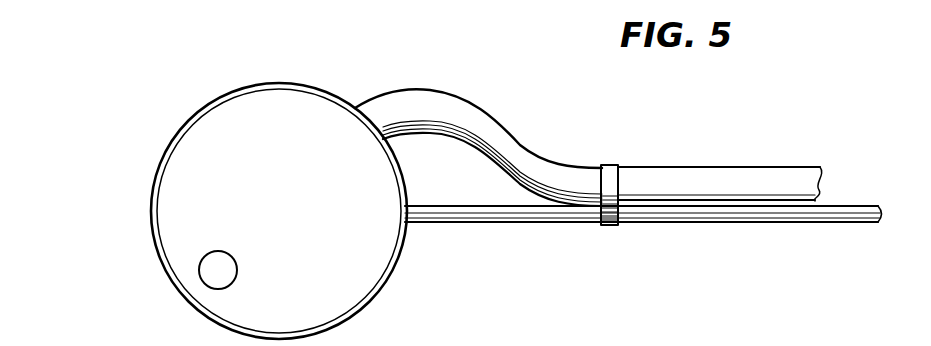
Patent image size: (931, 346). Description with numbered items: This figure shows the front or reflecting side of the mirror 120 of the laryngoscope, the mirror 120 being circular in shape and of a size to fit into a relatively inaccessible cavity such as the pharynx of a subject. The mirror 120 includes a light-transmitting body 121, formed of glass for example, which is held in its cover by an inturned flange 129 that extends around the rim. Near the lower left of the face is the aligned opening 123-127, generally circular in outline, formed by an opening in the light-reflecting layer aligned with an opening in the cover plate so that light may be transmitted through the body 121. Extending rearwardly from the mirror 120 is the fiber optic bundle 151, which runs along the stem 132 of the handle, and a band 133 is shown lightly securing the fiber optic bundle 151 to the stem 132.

The mirror 120 is at (230, 210).
The inturned flange 129 is at (177, 133).
The light-transmitting body 121 is at (340, 278).
The aligned opening 123-127 is at (202, 272).
The fiber optic bundle 151 is at (433, 98).
The stem 132 is at (775, 220).
The band 133 is at (610, 165).